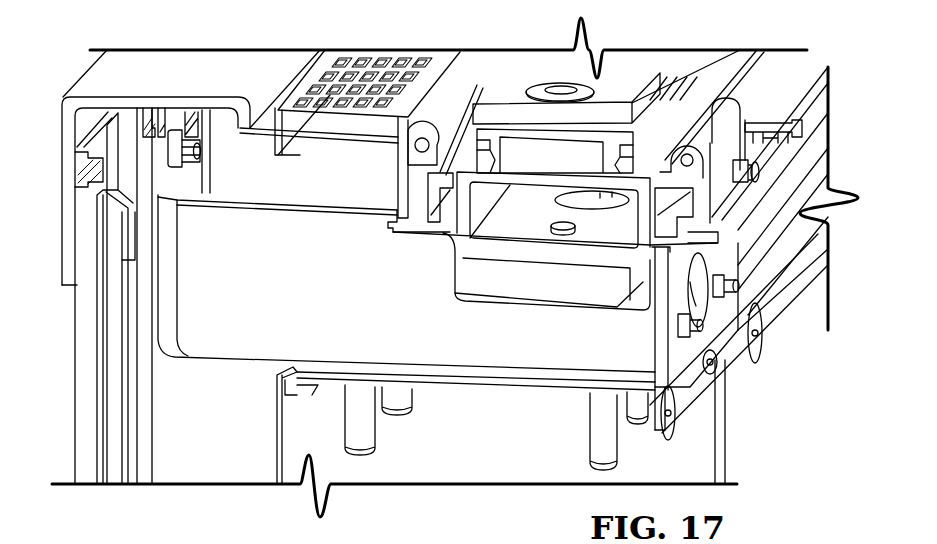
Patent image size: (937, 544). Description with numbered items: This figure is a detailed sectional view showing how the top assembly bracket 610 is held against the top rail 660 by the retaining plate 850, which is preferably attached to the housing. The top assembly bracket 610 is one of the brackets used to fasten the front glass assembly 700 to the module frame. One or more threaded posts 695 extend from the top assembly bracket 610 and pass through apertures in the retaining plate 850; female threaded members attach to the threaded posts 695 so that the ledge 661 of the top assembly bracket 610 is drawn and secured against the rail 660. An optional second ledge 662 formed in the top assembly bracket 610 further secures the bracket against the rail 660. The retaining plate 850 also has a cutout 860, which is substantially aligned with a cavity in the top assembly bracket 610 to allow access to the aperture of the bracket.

The front glass assembly 700 is at (66, 151).
The ledge 661 is at (388, 224).
The top rail 660 is at (422, 224).
The top assembly bracket 610 is at (258, 323).
The second ledge 662 is at (448, 252).
The retaining plate 850 is at (653, 332).
The threaded posts 695 is at (723, 277).
The cutout 860 is at (710, 304).